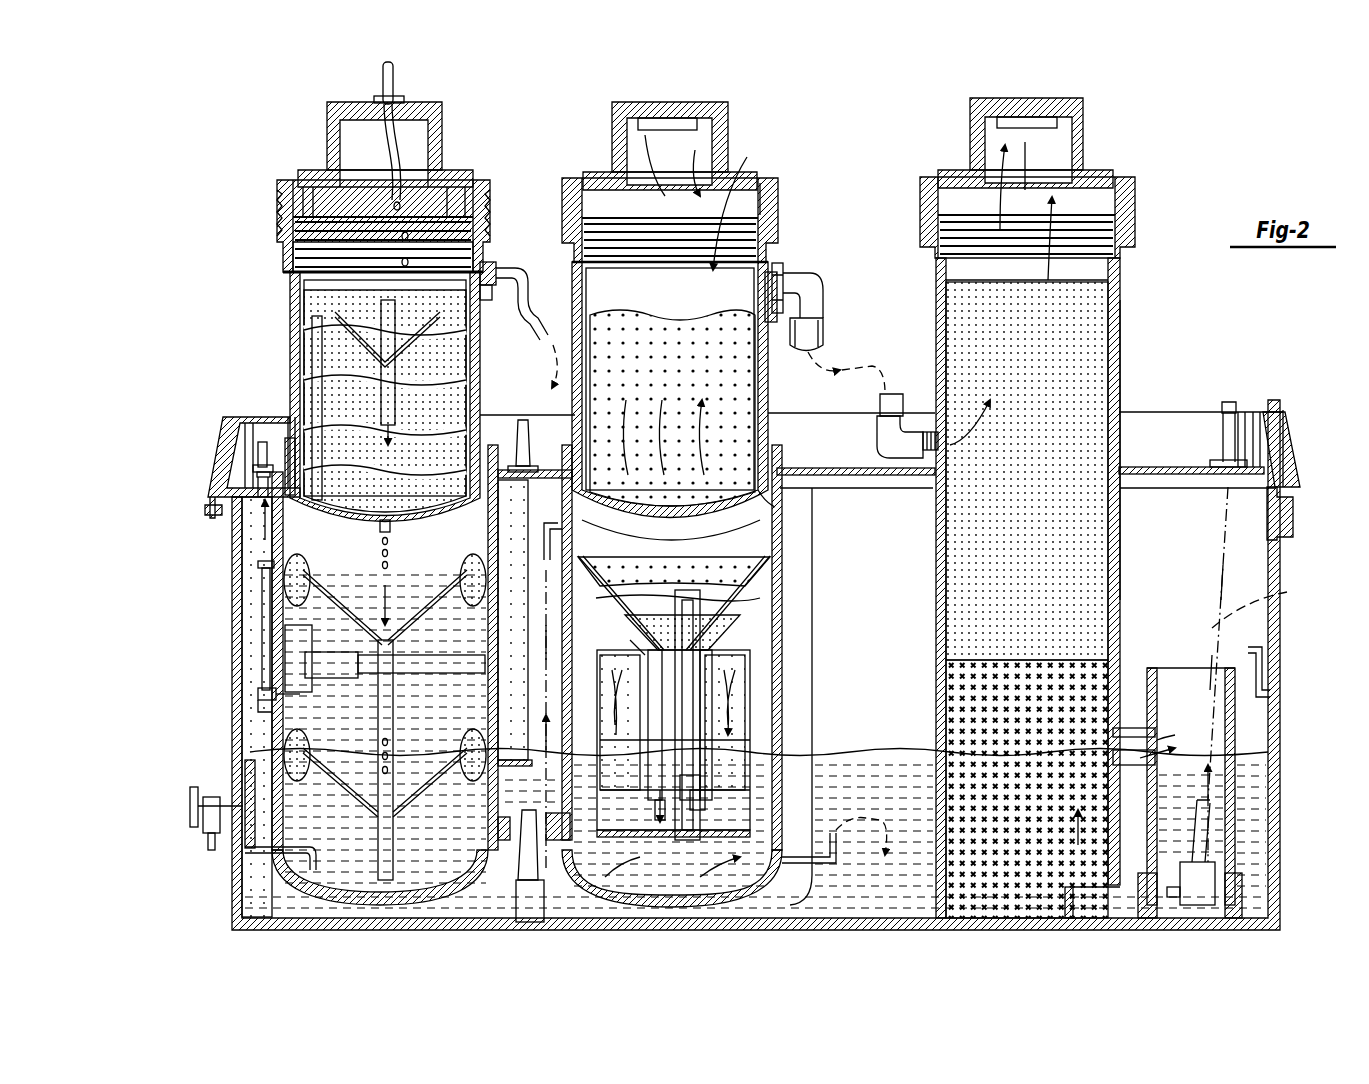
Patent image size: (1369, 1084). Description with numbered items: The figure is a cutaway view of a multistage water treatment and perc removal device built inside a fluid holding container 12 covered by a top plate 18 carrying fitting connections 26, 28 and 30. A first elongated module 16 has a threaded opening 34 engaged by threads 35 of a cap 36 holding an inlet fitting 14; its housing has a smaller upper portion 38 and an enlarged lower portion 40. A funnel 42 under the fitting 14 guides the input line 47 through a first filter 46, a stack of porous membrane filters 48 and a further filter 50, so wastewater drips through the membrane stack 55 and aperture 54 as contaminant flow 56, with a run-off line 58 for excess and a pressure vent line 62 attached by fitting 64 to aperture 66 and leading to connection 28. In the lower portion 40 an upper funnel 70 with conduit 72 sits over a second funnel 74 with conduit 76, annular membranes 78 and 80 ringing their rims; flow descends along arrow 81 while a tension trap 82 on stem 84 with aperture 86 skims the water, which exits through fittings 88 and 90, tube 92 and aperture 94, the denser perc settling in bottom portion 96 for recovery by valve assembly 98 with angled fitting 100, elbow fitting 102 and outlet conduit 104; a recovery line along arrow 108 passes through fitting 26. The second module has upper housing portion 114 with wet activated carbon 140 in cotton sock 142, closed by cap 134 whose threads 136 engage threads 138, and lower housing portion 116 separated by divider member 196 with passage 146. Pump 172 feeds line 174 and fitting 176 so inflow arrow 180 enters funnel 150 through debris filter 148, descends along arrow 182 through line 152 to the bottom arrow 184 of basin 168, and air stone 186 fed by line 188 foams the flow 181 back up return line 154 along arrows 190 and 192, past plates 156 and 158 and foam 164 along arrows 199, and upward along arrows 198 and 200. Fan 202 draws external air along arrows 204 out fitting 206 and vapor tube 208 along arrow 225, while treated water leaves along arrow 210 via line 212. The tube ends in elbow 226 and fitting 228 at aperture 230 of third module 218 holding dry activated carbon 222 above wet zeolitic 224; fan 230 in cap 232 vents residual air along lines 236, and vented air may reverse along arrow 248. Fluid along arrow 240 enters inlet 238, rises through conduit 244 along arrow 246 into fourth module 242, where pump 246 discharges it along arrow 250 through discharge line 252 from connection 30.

The fluid holding container 12 is at (1280, 626).
The fitting 14 is at (396, 88).
The first elongated module 16 is at (236, 268).
The top plate 18 is at (888, 476).
The fitting connection 26 is at (258, 453).
The fitting connection 28 is at (516, 466).
The fitting connection 30 is at (1213, 463).
The exteriorly threaded opening 34 is at (300, 185).
The inwardly directed threads 35 is at (283, 210).
The cap 36 is at (327, 112).
The upper housing portion 38 is at (480, 366).
The lower housing portion 40 is at (512, 580).
The funnel 42 is at (364, 336).
The first filter 46 is at (304, 362).
The input line 47 is at (400, 153).
The stack of porous membrane filters 48 is at (304, 412).
The further filter 50 is at (352, 485).
The central aperture 54 is at (392, 528).
The porous membrane stack 55 is at (400, 233).
The contaminant flow 56 is at (380, 566).
The run-off line 58 is at (312, 327).
The pressure vent line 62 is at (532, 336).
The fitting 64 is at (479, 272).
The aperture 66 is at (488, 300).
The upper funnel 70 is at (352, 592).
The conduit 72 is at (458, 647).
The second funnel 74 is at (426, 783).
The enlarged diameter conduit 76 is at (378, 848).
The porous filter membrane 78 is at (262, 565).
The porous filter membrane 80 is at (288, 740).
The downward flow arrow 81 is at (400, 612).
The tension trap assembly 82 is at (285, 666).
The supporting stem portion 84 is at (470, 672).
The aperture 86 is at (393, 690).
The fitting 88 is at (280, 701).
The fitting 90 is at (258, 703).
The connecting tube fitting 92 is at (258, 641).
The aperture 94 is at (264, 572).
The bottom located portion 96 is at (290, 890).
The output valve assembly 98 is at (220, 878).
The first angled fitting 100 is at (316, 846).
The elbow fitting 102 is at (245, 851).
The outlet conduit 104 is at (192, 788).
The recovery line arrow 108 is at (262, 548).
The upper housing portion 114 is at (770, 426).
The lower housing portion 116 is at (782, 531).
The cap 134 is at (612, 136).
The external threads 136 is at (576, 229).
The inwardly directed threads 138 is at (768, 206).
The wet activated carbon medium 140 is at (714, 379).
The cotton sock filter 142 is at (762, 372).
The passage 146 is at (678, 534).
The debris filter 148 is at (742, 636).
The modified funnel arrangement 150 is at (765, 601).
The downwardly extending line 152 is at (648, 770).
The return line 154 is at (705, 796).
The rigid plastic plate 156 is at (752, 661).
The rigid plastic plate 158 is at (720, 837).
The foam medium 164 is at (748, 691).
The cylindrical basin 168 is at (670, 845).
The first pump 172 is at (517, 898).
The line 174 is at (528, 810).
The fitting 176 is at (548, 523).
The inlet flow arrow 180 is at (613, 568).
The foamed flow 181 is at (770, 586).
The downward flow arrow 182 is at (628, 638).
The bottom flow arrow 184 is at (655, 809).
The air stone 186 is at (686, 809).
The line 188 is at (705, 783).
The return flow arrow 190 is at (693, 661).
The upper funnel return arrow 192 is at (702, 591).
The divider member 196 is at (768, 490).
The directional arrow 198 is at (696, 500).
The arrows 199 is at (732, 721).
The directional arrow 200 is at (660, 430).
The fan 202 is at (668, 131).
The air flow arrows 204 is at (703, 186).
The fitting 206 is at (816, 275).
The vapor tube 208 is at (823, 330).
The outlet arrow 210 is at (888, 815).
The outlet line 212 is at (834, 864).
The third elongated module 218 is at (1120, 539).
The dry activated carbon 222 is at (1120, 353).
The wet zeolitic 224 is at (1073, 666).
The vapor line arrow 225 is at (870, 361).
The elbow 226 is at (900, 416).
The fitting 228 is at (936, 456).
The fan 230 is at (975, 406).
The cap 232 is at (938, 176).
The vent lines 236 is at (1055, 166).
The inlet 238 is at (1097, 882).
The directional arrow 240 is at (1076, 858).
The fourth module 242 is at (1235, 801).
The conduit portion 244 is at (1148, 731).
The third pump 246 is at (1178, 873).
The reverse flow arrow 248 is at (1165, 736).
The discharge arrow 250 is at (1288, 592).
The discharge line 252 is at (1232, 402).